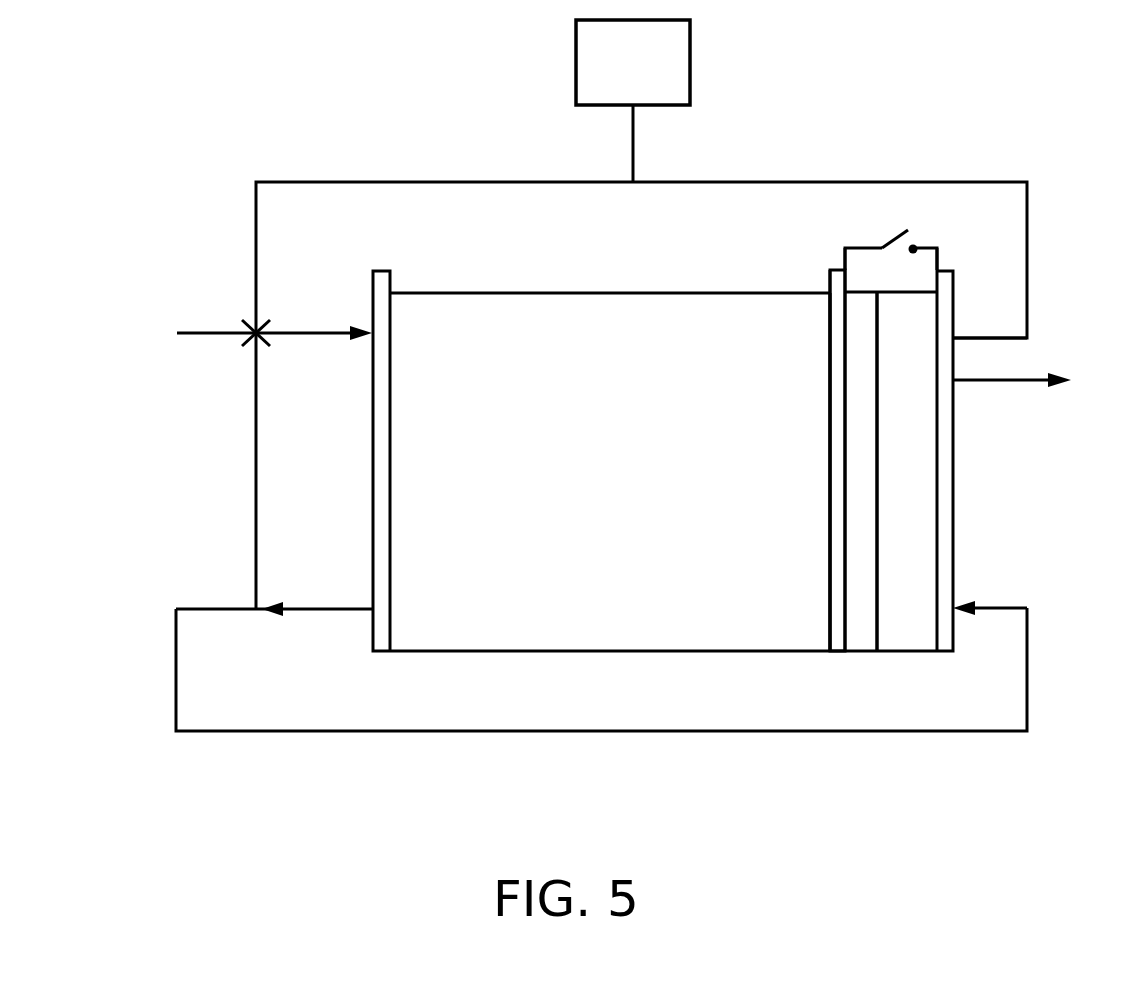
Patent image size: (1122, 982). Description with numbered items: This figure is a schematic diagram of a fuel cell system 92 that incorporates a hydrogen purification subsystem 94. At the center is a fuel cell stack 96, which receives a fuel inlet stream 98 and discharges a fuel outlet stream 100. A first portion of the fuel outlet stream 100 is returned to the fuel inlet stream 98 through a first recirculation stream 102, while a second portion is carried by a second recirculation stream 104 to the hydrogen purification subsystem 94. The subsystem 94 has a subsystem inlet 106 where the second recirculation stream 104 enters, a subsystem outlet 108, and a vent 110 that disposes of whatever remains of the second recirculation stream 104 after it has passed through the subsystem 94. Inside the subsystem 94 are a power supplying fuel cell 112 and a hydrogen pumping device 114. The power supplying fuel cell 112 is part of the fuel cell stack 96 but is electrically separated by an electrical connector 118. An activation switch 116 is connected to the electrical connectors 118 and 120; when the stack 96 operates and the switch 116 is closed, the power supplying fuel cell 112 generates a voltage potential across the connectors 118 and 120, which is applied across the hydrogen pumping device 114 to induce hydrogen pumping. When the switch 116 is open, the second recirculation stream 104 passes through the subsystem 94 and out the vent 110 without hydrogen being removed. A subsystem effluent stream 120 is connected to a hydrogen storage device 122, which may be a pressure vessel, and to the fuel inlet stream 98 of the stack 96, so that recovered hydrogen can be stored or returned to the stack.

The fuel cell system 92 is at (808, 846).
The hydrogen purification subsystem 94 is at (975, 503).
The fuel cell stack 96 is at (621, 478).
The fuel inlet stream 98 is at (306, 332).
The fuel outlet stream 100 is at (308, 608).
The first recirculation stream 102 is at (258, 455).
The second recirculation stream 104 is at (301, 731).
The subsystem inlet 106 is at (990, 590).
The subsystem outlet 108 is at (990, 321).
The vent 110 is at (1012, 396).
The power supplying fuel cell 112 is at (863, 355).
The hydrogen pumping device 114 is at (893, 428).
The activation switch 116 is at (891, 236).
The electrical connector 118 is at (845, 596).
The electrical connector / subsystem effluent stream 120 is at (1027, 238).
The hydrogen storage device 122 is at (616, 76).